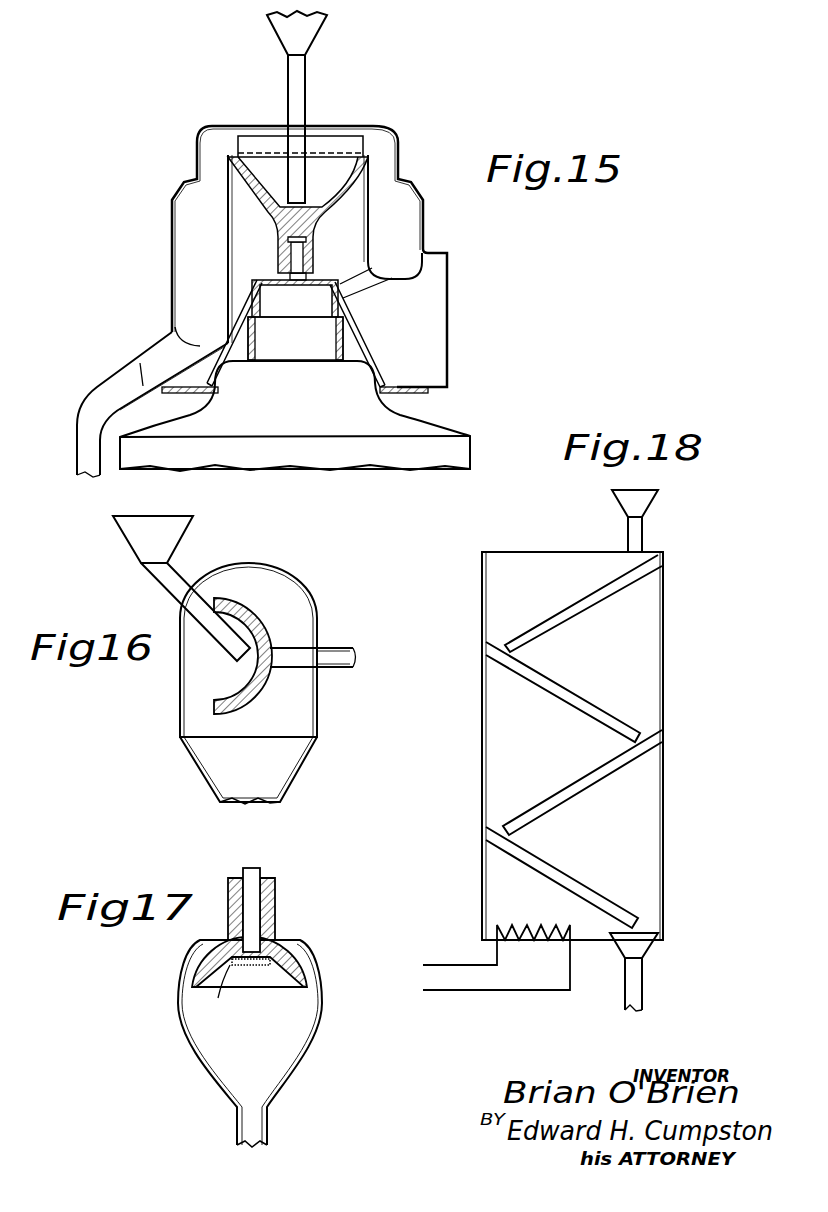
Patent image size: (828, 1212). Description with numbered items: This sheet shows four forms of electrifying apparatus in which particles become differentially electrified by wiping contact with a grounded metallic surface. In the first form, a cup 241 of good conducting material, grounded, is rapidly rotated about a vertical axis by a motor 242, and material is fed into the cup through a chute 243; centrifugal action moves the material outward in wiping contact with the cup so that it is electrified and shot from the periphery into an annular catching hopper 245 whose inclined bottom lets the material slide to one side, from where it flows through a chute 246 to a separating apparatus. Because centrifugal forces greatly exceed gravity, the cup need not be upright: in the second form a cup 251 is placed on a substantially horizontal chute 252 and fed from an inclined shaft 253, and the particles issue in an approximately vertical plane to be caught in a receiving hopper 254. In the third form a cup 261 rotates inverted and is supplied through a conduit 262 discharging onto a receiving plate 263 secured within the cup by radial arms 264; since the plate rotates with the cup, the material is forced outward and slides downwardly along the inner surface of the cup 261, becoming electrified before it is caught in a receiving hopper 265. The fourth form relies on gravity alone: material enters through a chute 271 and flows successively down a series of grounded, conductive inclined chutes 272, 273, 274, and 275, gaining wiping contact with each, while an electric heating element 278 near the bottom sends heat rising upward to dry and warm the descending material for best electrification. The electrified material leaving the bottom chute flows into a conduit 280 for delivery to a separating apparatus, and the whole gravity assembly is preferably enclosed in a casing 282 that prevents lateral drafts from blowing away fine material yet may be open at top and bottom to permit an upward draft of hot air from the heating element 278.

In FIG. 15, the cup 241 is at (267, 229).
In FIG. 15, the motor 242 is at (295, 375).
In FIG. 15, the chute 243 is at (305, 100).
In FIG. 15, the annular catching hopper 245 is at (396, 240).
In FIG. 15, the chute 246 is at (121, 385).
In FIG. 16, the cup 251 is at (243, 615).
In FIG. 16, the substantially horizontal chute 252 is at (347, 647).
In FIG. 16, the inclined shaft 253 is at (170, 588).
In FIG. 16, the receiving hopper 254 is at (317, 706).
In FIG. 17, the cup 261 is at (304, 968).
In FIG. 17, the conduit 262 is at (260, 876).
In FIG. 17, the receiving plate 263 is at (260, 967).
In FIG. 17, the radial arms 264 is at (222, 994).
In FIG. 17, the receiving hopper 265 is at (305, 1062).
In FIG. 18, the chute 271 is at (643, 531).
In FIG. 18, the inclined chute 272 is at (622, 587).
In FIG. 18, the inclined chute 273 is at (562, 694).
In FIG. 18, the inclined chute 274 is at (615, 772).
In FIG. 18, the inclined chute 275 is at (553, 871).
In FIG. 18, the electric heating element 278 is at (544, 922).
In FIG. 18, the conduit 280 is at (643, 978).
In FIG. 18, the casing 282 is at (665, 698).